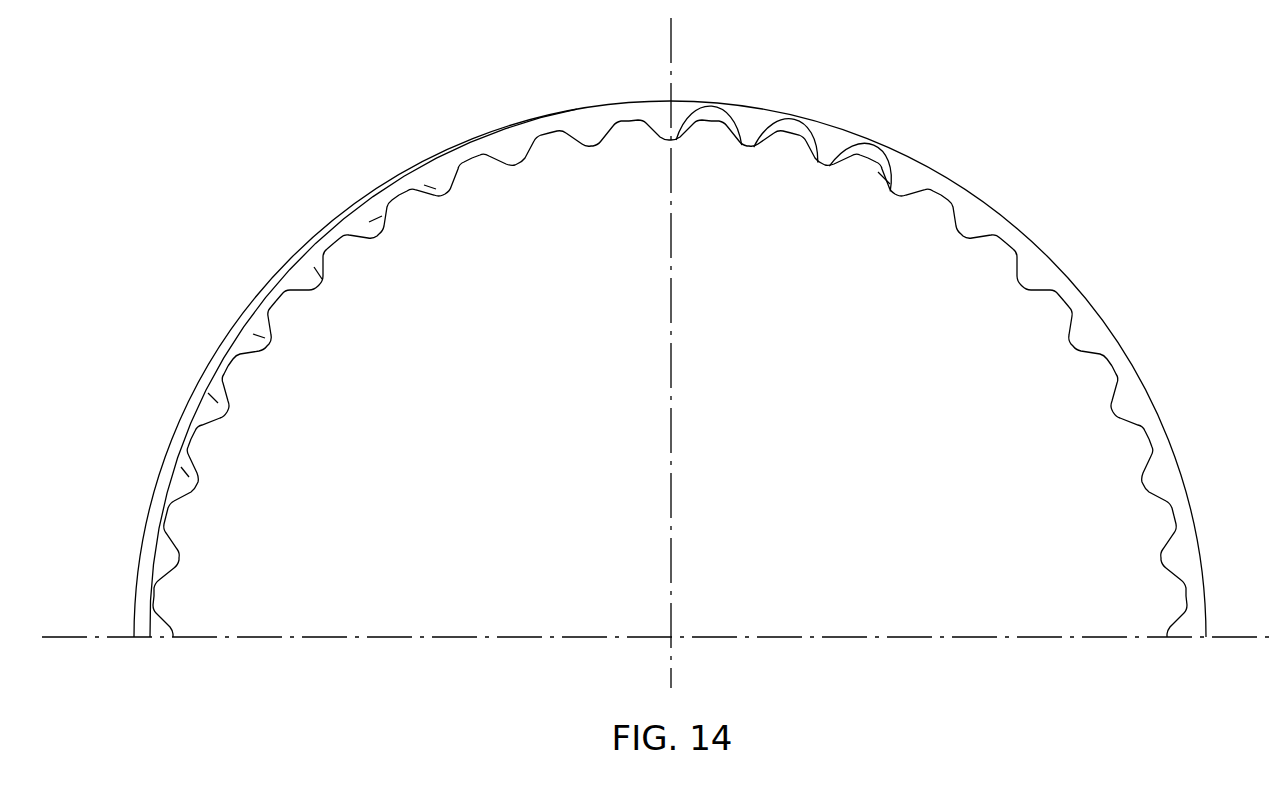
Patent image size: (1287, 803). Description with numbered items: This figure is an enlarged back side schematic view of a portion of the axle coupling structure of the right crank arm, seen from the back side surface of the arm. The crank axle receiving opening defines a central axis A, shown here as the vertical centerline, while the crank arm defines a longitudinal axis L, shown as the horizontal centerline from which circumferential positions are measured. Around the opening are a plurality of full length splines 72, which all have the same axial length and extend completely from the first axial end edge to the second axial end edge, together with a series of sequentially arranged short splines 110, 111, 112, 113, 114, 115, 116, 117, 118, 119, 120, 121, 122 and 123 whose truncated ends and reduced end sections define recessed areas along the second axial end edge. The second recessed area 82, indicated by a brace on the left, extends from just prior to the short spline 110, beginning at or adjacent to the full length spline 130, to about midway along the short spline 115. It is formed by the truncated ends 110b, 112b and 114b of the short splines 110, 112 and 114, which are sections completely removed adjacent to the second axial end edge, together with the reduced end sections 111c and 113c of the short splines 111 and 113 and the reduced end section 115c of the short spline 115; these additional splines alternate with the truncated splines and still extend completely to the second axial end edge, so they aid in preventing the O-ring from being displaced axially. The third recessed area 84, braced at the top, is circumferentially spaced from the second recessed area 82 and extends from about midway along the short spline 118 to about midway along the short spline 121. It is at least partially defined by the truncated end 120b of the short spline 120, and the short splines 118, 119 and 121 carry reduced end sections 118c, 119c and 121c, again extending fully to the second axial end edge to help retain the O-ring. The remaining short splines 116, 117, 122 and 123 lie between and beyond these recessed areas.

The full length splines 72 is at (1076, 336).
The second recessed area 82 is at (113, 493).
The third recessed area 84 is at (682, 70).
The short spline 110 is at (201, 485).
The truncated end 110b is at (185, 473).
The short spline 111 is at (230, 408).
The reduced end section 111c is at (213, 398).
The short spline 112 is at (270, 345).
The truncated end 112b is at (259, 336).
The short spline 113 is at (323, 288).
The reduced end section 113c is at (318, 273).
The short spline 114 is at (381, 234).
The truncated end 114b is at (376, 219).
The short spline 115 is at (457, 200).
The reduced end section 115c is at (430, 187).
The short spline 116 is at (519, 168).
The short spline 117 is at (597, 150).
The short spline 118 is at (670, 145).
The reduced end section 118c is at (688, 128).
The short spline 119 is at (746, 148).
The reduced end section 119c is at (772, 130).
The short spline 120 is at (821, 170).
The truncated end 120b is at (841, 154).
The short spline 121 is at (898, 202).
The reduced end section 121c is at (884, 178).
The short spline 122 is at (963, 243).
The short spline 123 is at (1017, 285).
The spline 130 is at (185, 556).
The central axis A is at (671, 637).
The longitudinal axis L is at (1267, 640).